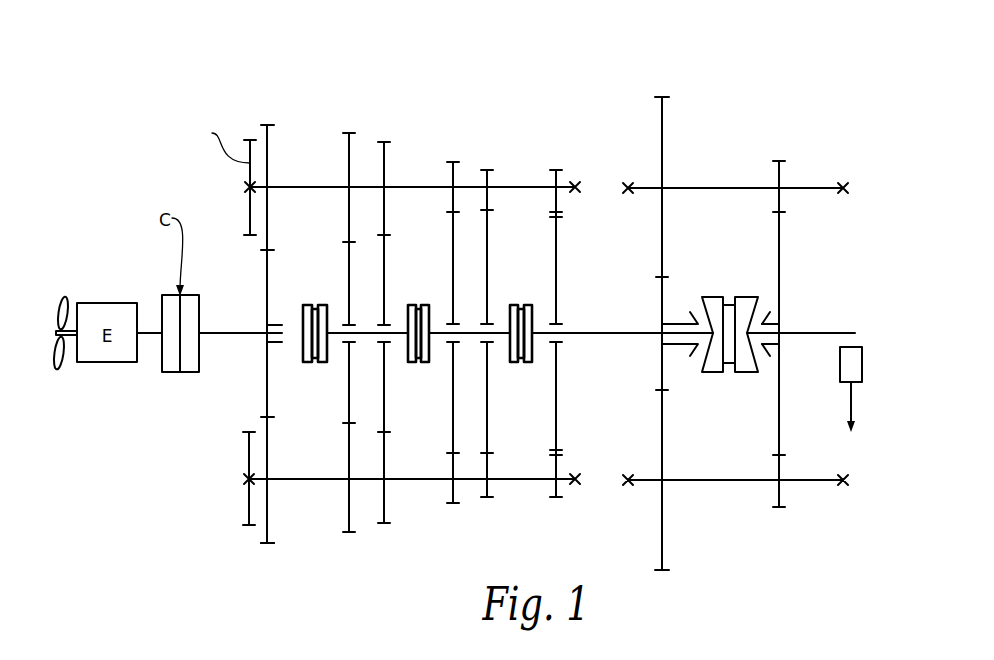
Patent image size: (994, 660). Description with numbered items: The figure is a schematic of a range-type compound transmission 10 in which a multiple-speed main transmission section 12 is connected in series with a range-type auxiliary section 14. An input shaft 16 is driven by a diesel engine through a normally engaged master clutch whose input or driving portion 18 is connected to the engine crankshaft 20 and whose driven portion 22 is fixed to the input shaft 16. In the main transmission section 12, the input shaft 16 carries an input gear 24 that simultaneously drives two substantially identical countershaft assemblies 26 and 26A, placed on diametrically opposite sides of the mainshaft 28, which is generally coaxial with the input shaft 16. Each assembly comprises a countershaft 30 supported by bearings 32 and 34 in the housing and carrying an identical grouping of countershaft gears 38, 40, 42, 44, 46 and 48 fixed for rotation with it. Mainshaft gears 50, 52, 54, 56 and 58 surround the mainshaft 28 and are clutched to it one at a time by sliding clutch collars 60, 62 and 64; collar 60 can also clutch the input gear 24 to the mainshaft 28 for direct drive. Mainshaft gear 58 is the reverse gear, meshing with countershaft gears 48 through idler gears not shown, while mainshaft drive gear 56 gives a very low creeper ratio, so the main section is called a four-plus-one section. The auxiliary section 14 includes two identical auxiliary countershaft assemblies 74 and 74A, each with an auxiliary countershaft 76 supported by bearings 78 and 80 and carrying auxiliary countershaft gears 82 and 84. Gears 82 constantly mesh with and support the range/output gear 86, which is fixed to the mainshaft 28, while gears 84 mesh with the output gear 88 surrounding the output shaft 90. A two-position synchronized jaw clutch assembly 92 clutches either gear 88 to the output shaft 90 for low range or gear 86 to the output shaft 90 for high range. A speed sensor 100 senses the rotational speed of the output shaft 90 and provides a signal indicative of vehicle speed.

The compound transmission 10 is at (597, 82).
The main transmission section 12 is at (428, 128).
The range-type auxiliary section 14 is at (735, 114).
The input shaft 16 is at (224, 333).
The input or driving portion 18 is at (162, 364).
The engine crankshaft 20 is at (143, 327).
The driven portion 22 is at (196, 373).
The input gear 24 is at (262, 349).
The countershaft assembly 26 is at (415, 160).
The countershaft assembly 26A is at (433, 525).
The mainshaft 28 is at (610, 333).
The countershaft 30 is at (327, 189).
The bearing 32 is at (249, 508).
The bearing 34 is at (578, 483).
The countershaft gear 38 is at (263, 528).
The countershaft gear 40 is at (326, 357).
The countershaft gear 42 is at (409, 363).
The countershaft gear 44 is at (430, 353).
The countershaft gear 46 is at (509, 358).
The countershaft gear 48 is at (537, 354).
The mainshaft gear 50 is at (349, 403).
The mainshaft gear 52 is at (384, 392).
The mainshaft gear 54 is at (453, 430).
The mainshaft drive gear 56 is at (487, 410).
The mainshaft gear 58 is at (556, 410).
The sliding clutch collar 60 is at (318, 362).
The sliding clutch collar 62 is at (412, 305).
The sliding clutch collar 64 is at (513, 306).
The auxiliary countershaft assembly 74 is at (731, 176).
The auxiliary countershaft assembly 74A is at (710, 484).
The auxiliary countershaft 76 is at (695, 189).
The bearing 78 is at (628, 192).
The bearing 80 is at (843, 182).
The auxiliary section countershaft gear 82 is at (654, 333).
The auxiliary section countershaft gear 84 is at (776, 305).
The range/output gear 86 is at (662, 252).
The output gear 88 is at (779, 232).
The output shaft 90 is at (823, 328).
The synchronized jaw clutch assembly 92 is at (745, 378).
The speed sensor 100 is at (840, 366).